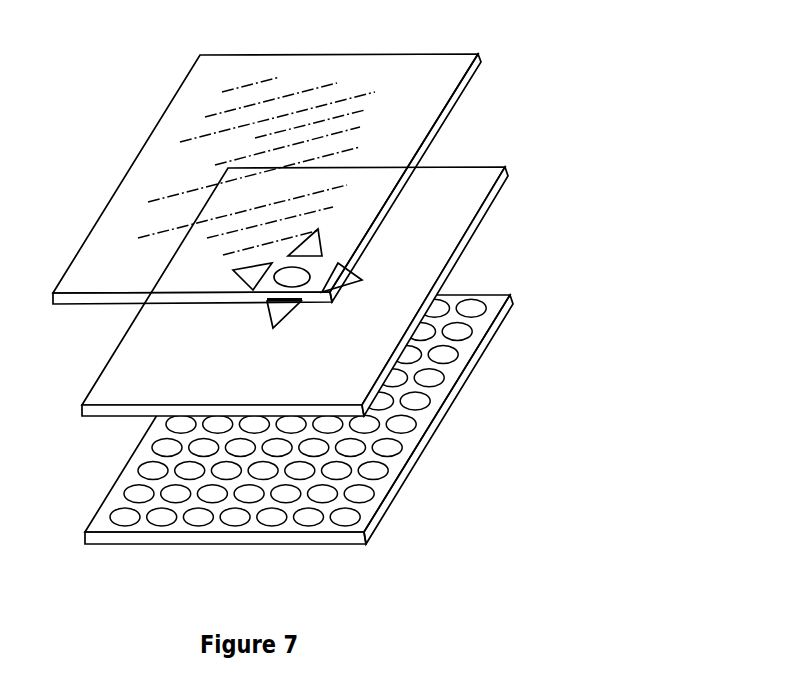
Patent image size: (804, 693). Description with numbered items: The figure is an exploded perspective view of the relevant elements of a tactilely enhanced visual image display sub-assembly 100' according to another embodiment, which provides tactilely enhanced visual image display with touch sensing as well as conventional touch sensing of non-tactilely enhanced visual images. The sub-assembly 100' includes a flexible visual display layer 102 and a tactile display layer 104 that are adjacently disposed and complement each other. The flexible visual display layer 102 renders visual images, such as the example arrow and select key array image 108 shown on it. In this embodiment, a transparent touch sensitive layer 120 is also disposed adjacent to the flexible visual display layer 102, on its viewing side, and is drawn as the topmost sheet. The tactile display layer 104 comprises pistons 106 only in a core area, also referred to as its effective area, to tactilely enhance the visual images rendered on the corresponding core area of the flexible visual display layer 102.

The tactilely enhanced visual image display sub-assembly 100' is at (632, 346).
The flexible visual display layer 102 is at (493, 165).
The tactile display layer 104 is at (331, 396).
The pistons 106 is at (428, 400).
The key array image 108 is at (283, 310).
The transparent touch sensitive layer 120 is at (473, 53).